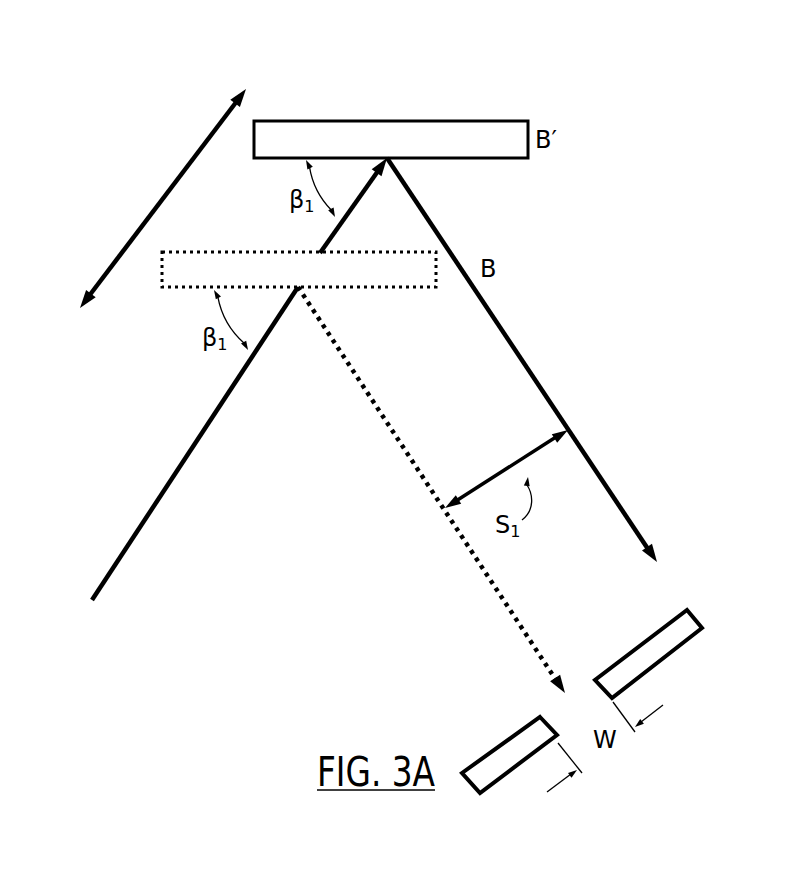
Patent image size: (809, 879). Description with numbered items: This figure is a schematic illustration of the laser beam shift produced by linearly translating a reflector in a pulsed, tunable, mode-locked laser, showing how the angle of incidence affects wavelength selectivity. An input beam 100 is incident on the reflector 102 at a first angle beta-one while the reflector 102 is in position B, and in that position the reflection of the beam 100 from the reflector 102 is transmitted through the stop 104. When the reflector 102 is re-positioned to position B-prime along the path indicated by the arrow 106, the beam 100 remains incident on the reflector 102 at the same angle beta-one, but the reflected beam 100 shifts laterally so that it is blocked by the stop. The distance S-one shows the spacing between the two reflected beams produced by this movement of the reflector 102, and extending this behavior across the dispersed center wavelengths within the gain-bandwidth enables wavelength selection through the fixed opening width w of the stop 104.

The input beam 100 is at (168, 485).
The reflector 102 is at (425, 121).
The stop 104 is at (695, 616).
The arrow 106 is at (169, 158).